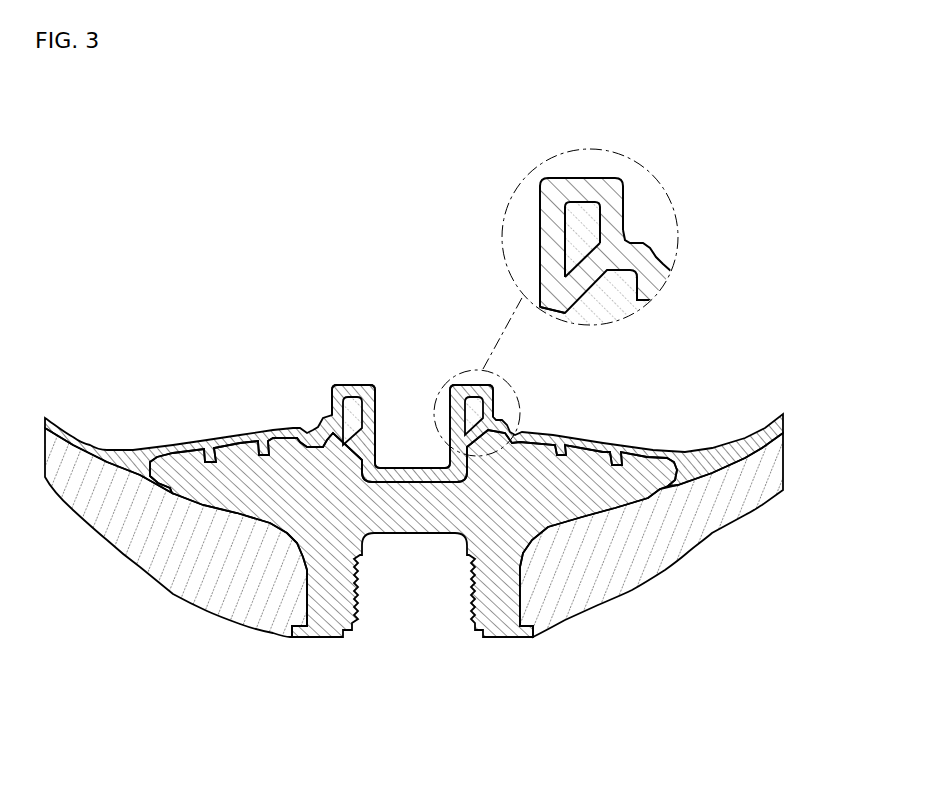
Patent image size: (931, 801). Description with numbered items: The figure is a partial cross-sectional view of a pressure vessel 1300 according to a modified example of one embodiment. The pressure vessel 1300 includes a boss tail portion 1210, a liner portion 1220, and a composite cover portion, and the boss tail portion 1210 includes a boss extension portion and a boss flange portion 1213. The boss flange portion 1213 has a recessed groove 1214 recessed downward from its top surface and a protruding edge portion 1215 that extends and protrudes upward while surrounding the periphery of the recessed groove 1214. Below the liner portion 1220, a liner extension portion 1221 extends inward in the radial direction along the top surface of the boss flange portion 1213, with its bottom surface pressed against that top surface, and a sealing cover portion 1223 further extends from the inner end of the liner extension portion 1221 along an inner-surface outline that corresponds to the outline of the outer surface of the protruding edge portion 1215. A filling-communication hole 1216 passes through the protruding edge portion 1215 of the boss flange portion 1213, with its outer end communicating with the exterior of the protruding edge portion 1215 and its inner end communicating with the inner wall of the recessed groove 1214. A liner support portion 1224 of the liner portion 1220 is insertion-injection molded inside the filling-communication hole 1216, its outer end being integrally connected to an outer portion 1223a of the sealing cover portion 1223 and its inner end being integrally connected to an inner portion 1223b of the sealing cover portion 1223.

The pressure vessel 1300 is at (150, 265).
The boss tail portion 1210 is at (322, 639).
The boss flange portion 1213 is at (605, 490).
The liner extension portion 1221 is at (600, 438).
The liner portion 1220 is at (307, 427).
The recessed groove 1214 is at (408, 478).
The sealing cover portion 1223 is at (588, 190).
The outer portion of the sealing cover portion 1223a is at (627, 231).
The inner portion of the sealing cover portion 1223b is at (553, 283).
The protruding edge portion 1215 is at (578, 228).
The liner support portion 1224 is at (563, 257).
The filling-communication hole 1216 is at (600, 287).